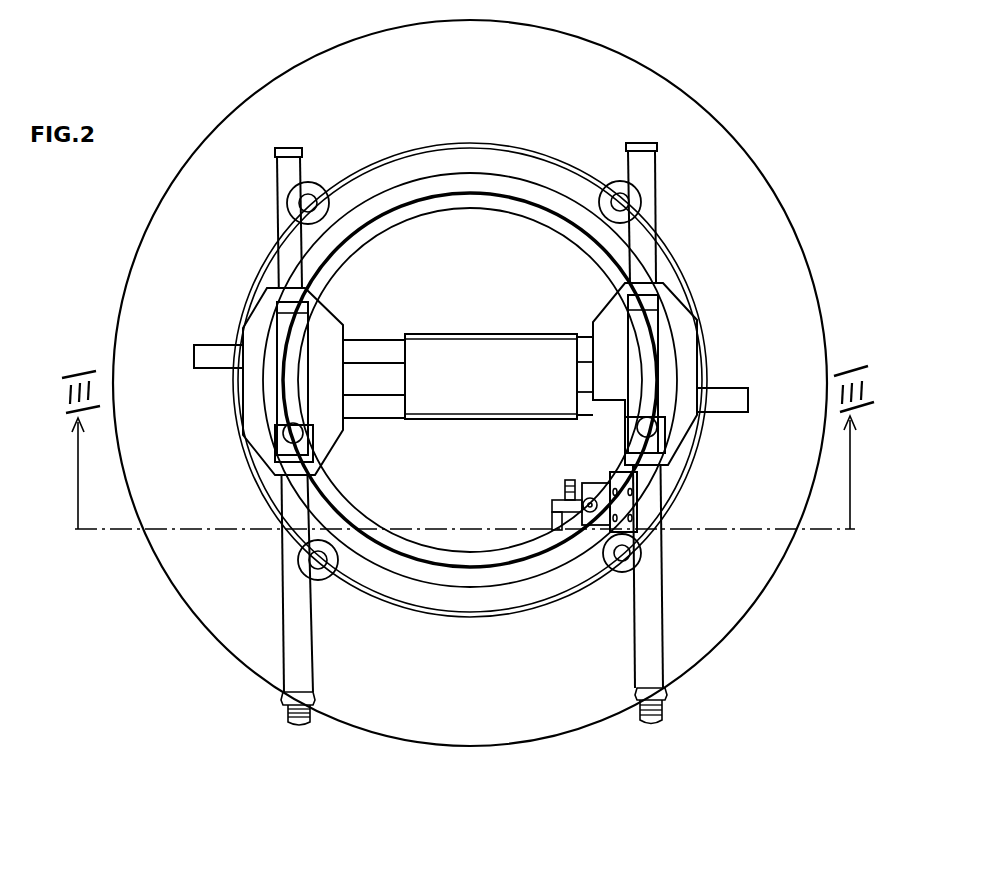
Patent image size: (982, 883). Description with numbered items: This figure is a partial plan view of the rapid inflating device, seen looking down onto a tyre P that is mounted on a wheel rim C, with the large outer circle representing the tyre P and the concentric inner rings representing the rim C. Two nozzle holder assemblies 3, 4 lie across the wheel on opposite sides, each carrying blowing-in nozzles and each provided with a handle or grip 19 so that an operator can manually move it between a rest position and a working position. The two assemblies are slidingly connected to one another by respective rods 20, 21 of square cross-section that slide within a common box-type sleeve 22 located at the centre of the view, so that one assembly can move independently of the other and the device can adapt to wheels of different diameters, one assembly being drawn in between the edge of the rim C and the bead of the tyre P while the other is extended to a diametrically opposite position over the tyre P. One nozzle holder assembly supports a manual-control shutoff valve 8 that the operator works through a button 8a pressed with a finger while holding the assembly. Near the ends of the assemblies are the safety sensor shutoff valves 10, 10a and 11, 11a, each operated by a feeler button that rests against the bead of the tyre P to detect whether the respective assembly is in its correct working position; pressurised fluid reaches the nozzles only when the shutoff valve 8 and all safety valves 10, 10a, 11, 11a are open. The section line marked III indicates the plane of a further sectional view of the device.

The tyre P is at (688, 107).
The wheel rim C is at (373, 182).
The nozzle holder assembly 3 is at (653, 665).
The nozzle holder assembly 4 is at (290, 652).
The shutoff valve 8 is at (606, 528).
The button 8a is at (587, 490).
The shutoff valve 10 is at (613, 187).
The shutoff valve 10a is at (620, 572).
The shutoff valve 11 is at (322, 192).
The shutoff valve 11a is at (327, 580).
The handle 19 is at (287, 343).
The rod 20 is at (370, 347).
The rod 21 is at (382, 410).
The box-type sleeve 22 is at (470, 348).
The section line III is at (468, 447).